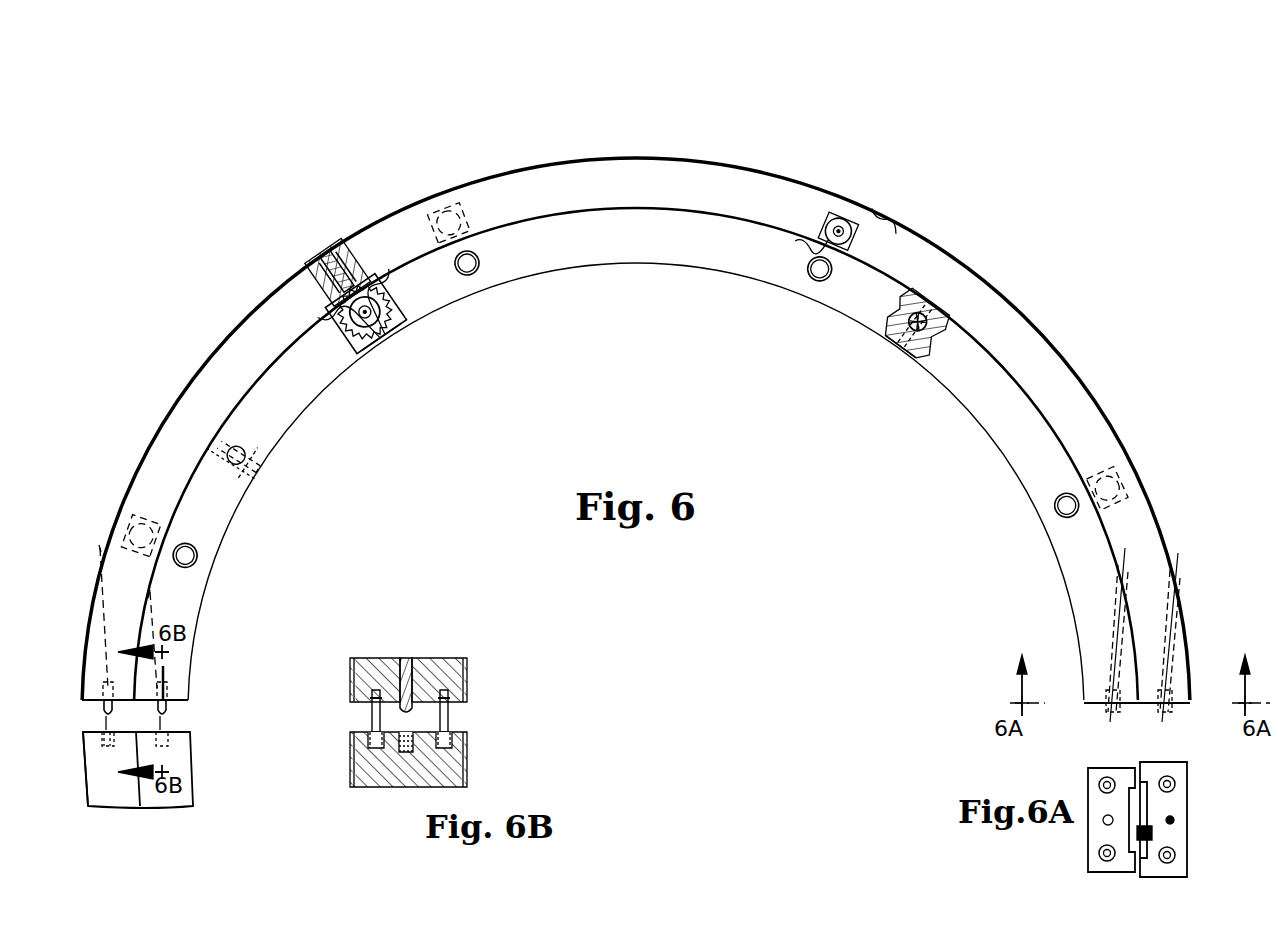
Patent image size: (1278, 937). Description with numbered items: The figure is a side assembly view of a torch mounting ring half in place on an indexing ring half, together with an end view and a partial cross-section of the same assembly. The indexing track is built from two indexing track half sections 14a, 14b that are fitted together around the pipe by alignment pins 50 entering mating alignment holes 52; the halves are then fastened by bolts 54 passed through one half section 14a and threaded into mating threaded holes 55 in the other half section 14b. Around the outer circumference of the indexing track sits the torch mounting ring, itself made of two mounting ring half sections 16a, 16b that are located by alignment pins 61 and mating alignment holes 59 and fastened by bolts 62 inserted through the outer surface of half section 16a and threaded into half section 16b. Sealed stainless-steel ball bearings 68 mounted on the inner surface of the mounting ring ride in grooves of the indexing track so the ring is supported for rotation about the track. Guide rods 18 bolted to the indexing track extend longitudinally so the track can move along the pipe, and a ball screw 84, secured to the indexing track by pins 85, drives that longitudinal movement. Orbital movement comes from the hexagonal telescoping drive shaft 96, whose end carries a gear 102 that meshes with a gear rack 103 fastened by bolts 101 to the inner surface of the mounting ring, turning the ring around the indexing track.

In FIG. 6, the indexing track half section 14a is at (182, 677).
In FIG. 6B, the indexing track half section 14a is at (468, 676).
In FIG. 6, the indexing track half section 14b is at (190, 770).
In FIG. 6B, the indexing track half section 14b is at (466, 776).
In FIG. 6, the mounting ring half section 16a is at (98, 629).
In FIG. 6, the mounting ring half section 16b is at (110, 797).
In FIG. 6, the guide rods 18 is at (482, 280).
In FIG. 6, the alignment pins 50 is at (170, 706).
In FIG. 6B, the alignment pins 50 is at (372, 706).
In FIG. 6, the alignment holes 52 is at (176, 741).
In FIG. 6B, the alignment holes 52 is at (375, 747).
In FIG. 6A, the alignment holes 52 is at (1108, 779).
In FIG. 6, the bolts 54 is at (152, 592).
In FIG. 6B, the bolts 54 is at (438, 636).
In FIG. 6A, the bolts 54 is at (1102, 818).
In FIG. 6B, the threaded holes 55 is at (405, 752).
In FIG. 6, the alignment holes 59 is at (96, 735).
In FIG. 6A, the alignment holes 59 is at (1175, 783).
In FIG. 6, the alignment pins 61 is at (100, 707).
In FIG. 6, the bolts 62 is at (100, 551).
In FIG. 6A, the bolts 62 is at (1176, 820).
In FIG. 6, the ball bearings 68 is at (450, 212).
In FIG. 6, the ball screw 84 is at (934, 312).
In FIG. 6, the pins 85 is at (906, 348).
In FIG. 6, the telescoping drive shaft 96 is at (384, 332).
In FIG. 6, the bolts 101 is at (332, 262).
In FIG. 6, the gear 102 is at (350, 368).
In FIG. 6, the gear rack 103 is at (368, 256).